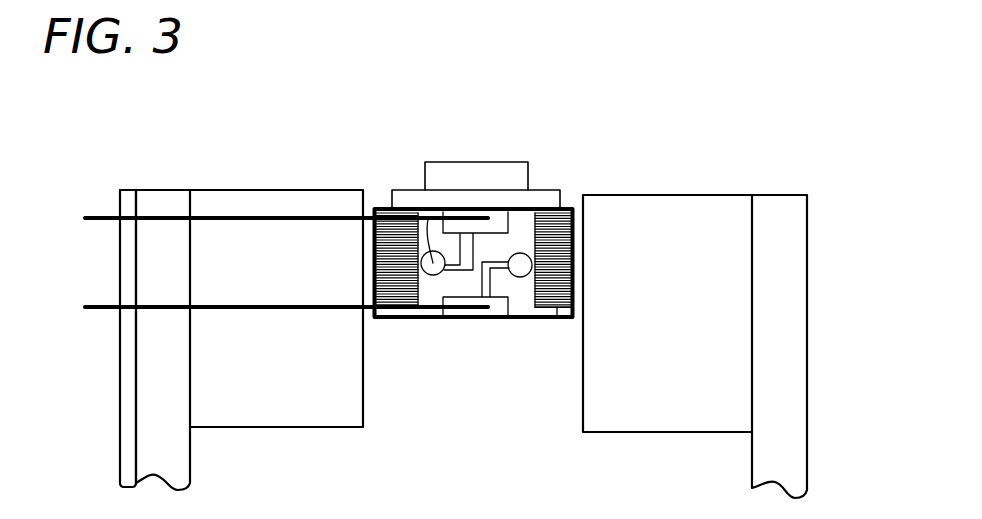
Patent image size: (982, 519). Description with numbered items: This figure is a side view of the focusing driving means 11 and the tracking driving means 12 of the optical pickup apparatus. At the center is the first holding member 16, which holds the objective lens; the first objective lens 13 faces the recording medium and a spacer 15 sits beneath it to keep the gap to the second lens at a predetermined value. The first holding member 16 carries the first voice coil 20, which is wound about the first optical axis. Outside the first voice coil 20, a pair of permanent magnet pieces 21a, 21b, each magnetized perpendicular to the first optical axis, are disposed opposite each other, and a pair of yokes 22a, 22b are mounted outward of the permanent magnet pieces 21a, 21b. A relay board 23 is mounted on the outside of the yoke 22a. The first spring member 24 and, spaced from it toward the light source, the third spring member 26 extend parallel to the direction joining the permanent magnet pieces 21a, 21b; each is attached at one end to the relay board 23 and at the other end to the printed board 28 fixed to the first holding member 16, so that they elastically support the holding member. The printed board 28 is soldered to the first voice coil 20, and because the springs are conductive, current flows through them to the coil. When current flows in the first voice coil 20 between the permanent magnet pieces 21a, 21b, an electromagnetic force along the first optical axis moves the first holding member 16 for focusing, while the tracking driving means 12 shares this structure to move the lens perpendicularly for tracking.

The focusing driving means 11 is at (667, 84).
The tracking driving means 12 is at (742, 84).
The first objective lens 13 is at (485, 177).
The spacer 15 is at (547, 200).
The first holding member 16 is at (543, 322).
The first voice coil 20 is at (562, 323).
The permanent magnet piece 21a is at (292, 202).
The permanent magnet piece 21b is at (677, 210).
The yoke 22a is at (155, 271).
The yoke 22b is at (793, 308).
The relay board 23 is at (125, 413).
The first spring member 24 is at (270, 222).
The third spring member 26 is at (270, 313).
The printed board 28 is at (521, 268).